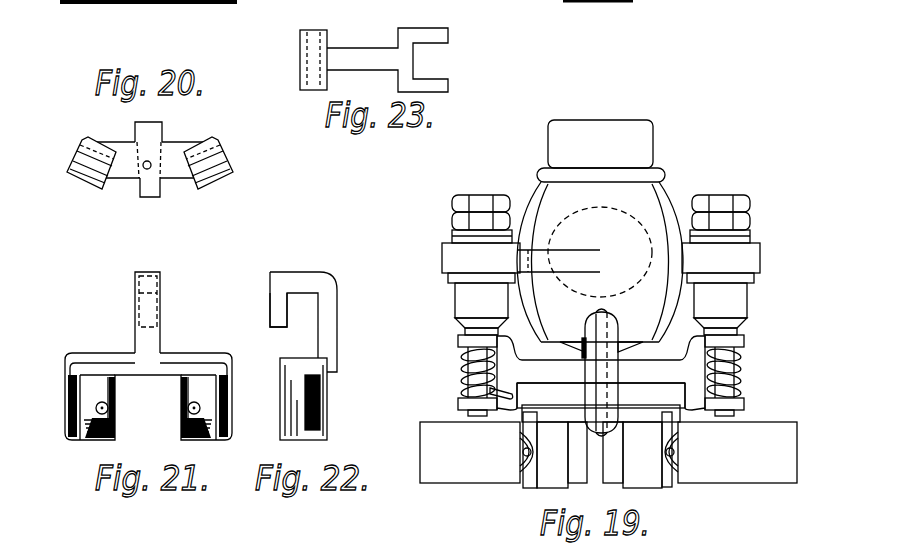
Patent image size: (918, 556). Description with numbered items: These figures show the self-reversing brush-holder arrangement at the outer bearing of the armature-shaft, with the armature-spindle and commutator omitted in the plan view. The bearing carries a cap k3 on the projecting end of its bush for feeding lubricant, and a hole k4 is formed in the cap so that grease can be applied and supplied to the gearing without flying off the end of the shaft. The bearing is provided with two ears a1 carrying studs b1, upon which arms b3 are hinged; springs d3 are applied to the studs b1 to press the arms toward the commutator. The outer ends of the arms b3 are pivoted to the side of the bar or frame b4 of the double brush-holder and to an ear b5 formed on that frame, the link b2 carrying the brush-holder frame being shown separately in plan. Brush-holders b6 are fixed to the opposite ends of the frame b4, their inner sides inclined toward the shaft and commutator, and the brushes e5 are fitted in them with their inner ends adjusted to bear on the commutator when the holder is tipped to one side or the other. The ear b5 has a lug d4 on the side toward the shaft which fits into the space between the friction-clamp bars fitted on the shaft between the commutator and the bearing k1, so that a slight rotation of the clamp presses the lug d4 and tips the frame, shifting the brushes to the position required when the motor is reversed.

In FIG. 20, the bar or frame b4 is at (178, 148).
In FIG. 21, the bar or frame b4 is at (186, 348).
In FIG. 19, the bar or frame b4 is at (615, 415).
In FIG. 20, the lug d4 is at (150, 190).
In FIG. 21, the lug d4 is at (137, 310).
In FIG. 22, the lug d4 is at (270, 317).
In FIG. 19, the lug d4 is at (582, 354).
In FIG. 20, the brush-holders b6 is at (70, 160).
In FIG. 21, the brush-holders b6 is at (68, 418).
In FIG. 22, the brush-holders b6 is at (328, 418).
In FIG. 19, the brush-holders b6 is at (548, 473).
In FIG. 23, the arms b3 is at (300, 57).
In FIG. 23, the bracket arm b2 is at (368, 48).
In FIG. 19, the bracket arm b2 is at (581, 342).
In FIG. 21, the ear b5 is at (160, 288).
In FIG. 22, the ear b5 is at (310, 276).
In FIG. 19, the hole k4 is at (602, 135).
In FIG. 19, the cap k3 is at (653, 142).
In FIG. 19, the bearing k1 is at (595, 237).
In FIG. 19, the ears a1 is at (442, 257).
In FIG. 19, the springs d3 is at (461, 353).
In FIG. 19, the studs b1 is at (462, 390).
In FIG. 19, the brushes e5 is at (608, 452).